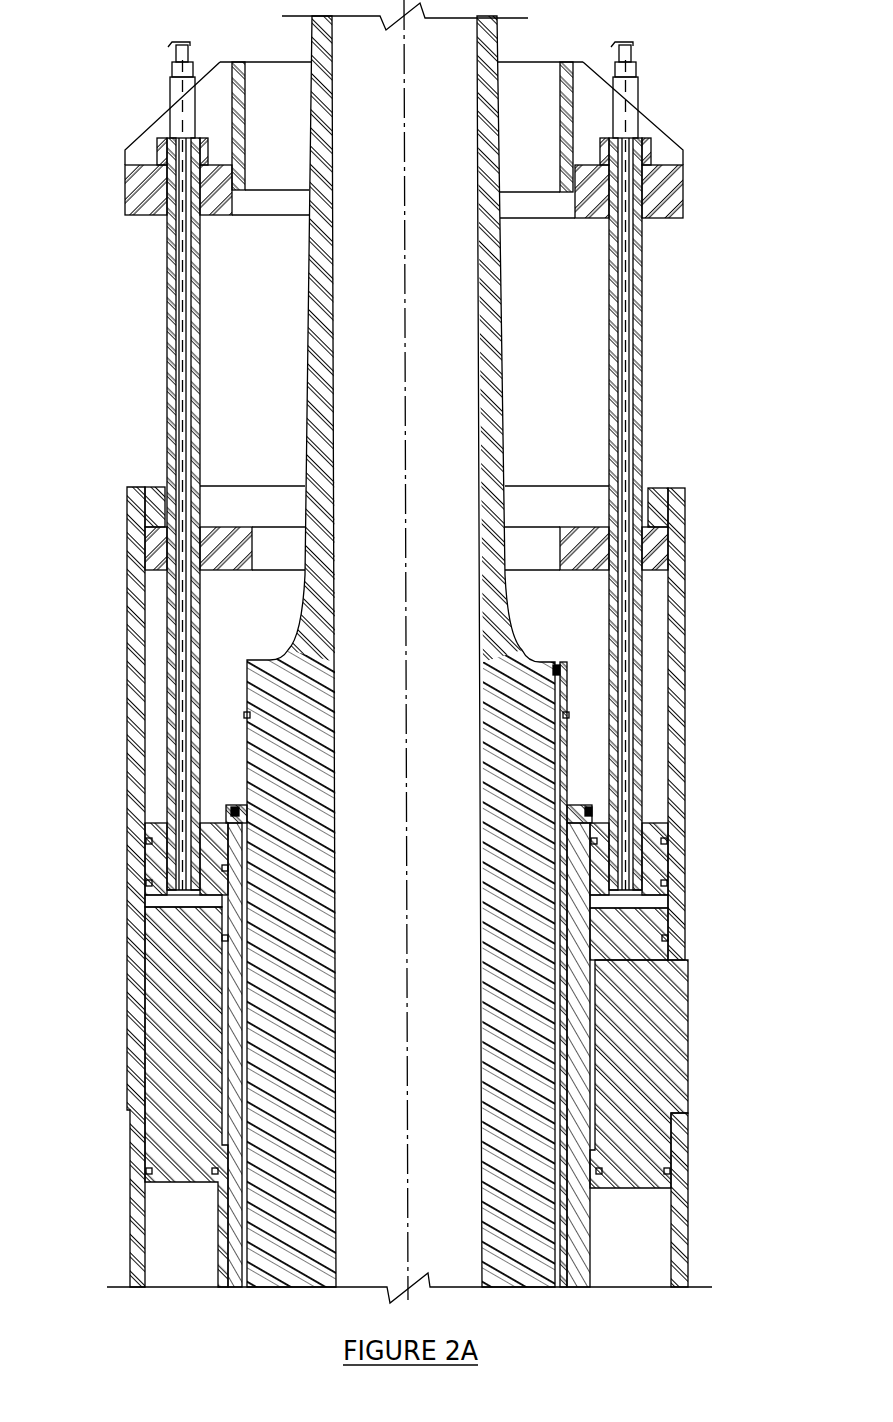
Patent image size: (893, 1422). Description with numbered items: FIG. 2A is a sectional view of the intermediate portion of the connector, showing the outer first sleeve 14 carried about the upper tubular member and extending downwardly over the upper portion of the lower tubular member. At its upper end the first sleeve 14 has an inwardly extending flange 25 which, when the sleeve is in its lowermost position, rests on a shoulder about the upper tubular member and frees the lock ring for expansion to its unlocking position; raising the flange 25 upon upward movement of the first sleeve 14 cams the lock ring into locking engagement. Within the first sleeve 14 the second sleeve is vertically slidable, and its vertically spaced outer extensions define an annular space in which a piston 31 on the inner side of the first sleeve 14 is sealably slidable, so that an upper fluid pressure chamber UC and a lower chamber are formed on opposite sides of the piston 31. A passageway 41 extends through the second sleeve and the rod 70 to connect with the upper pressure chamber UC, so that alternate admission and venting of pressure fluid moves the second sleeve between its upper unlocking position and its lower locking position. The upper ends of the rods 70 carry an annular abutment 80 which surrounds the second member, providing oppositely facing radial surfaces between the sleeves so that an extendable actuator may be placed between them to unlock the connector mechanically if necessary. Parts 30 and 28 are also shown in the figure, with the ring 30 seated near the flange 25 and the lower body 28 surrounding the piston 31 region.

The annular abutment 80 is at (124, 180).
The rod 70 is at (165, 318).
The inwardly extending flange 25 is at (128, 488).
The ring 30 is at (143, 553).
The upper fluid pressure chamber UC is at (147, 880).
The piston 31 is at (186, 900).
The lower body 28 is at (212, 975).
The passageway 41 is at (633, 767).
The first sleeve 14 is at (688, 1205).